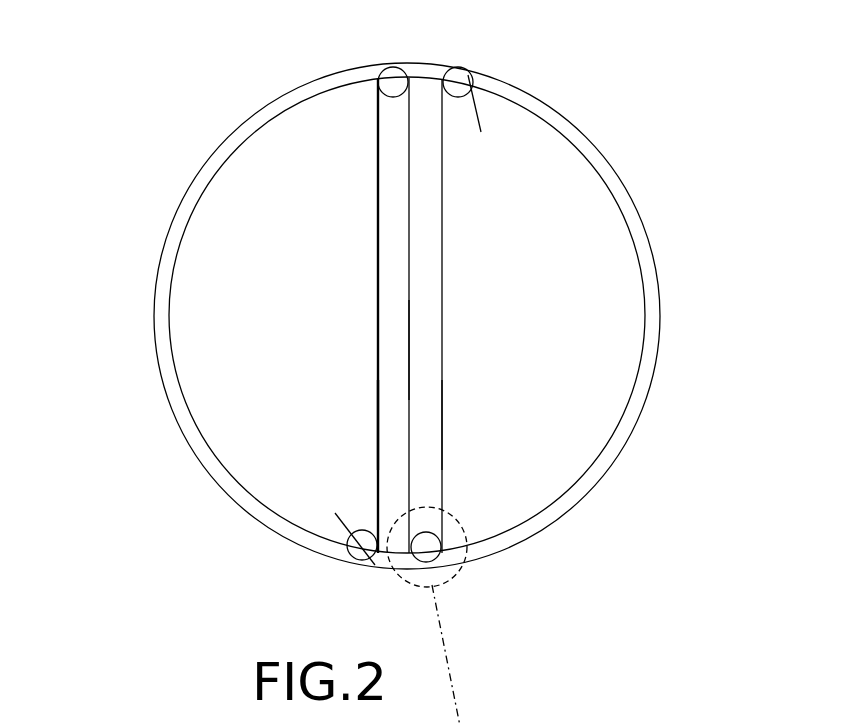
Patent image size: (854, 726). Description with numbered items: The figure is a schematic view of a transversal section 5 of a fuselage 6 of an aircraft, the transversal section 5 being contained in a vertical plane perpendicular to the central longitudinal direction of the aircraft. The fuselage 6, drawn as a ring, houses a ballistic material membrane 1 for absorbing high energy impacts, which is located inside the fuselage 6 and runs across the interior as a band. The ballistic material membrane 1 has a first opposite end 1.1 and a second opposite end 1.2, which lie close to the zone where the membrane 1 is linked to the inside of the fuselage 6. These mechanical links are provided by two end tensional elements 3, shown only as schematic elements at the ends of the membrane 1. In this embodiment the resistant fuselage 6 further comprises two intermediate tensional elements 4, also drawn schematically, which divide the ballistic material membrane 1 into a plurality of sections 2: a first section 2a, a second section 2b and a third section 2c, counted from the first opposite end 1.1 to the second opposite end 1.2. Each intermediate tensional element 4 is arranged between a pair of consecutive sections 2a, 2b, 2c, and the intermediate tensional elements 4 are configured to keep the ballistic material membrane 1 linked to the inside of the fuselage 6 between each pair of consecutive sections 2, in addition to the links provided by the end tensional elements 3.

The transversal section 5 is at (119, 118).
The fuselage 6 is at (653, 243).
The ballistic material membrane 1 is at (331, 243).
The sections 2 is at (499, 262).
The first section 2a is at (378, 425).
The second section 2b is at (409, 340).
The third section 2c is at (442, 415).
The end tensional elements 3 is at (456, 66).
The intermediate tensional elements 4 is at (386, 68).
The first opposite end 1.1 is at (335, 513).
The second opposite end 1.2 is at (478, 110).